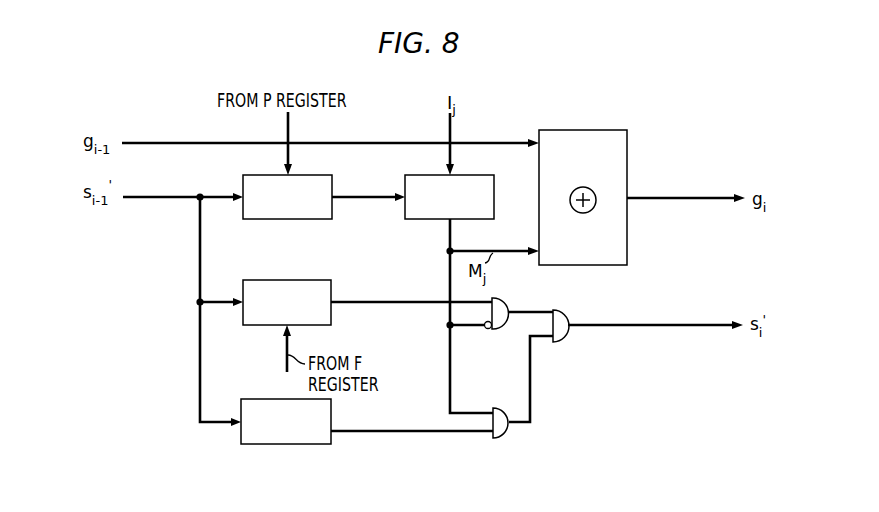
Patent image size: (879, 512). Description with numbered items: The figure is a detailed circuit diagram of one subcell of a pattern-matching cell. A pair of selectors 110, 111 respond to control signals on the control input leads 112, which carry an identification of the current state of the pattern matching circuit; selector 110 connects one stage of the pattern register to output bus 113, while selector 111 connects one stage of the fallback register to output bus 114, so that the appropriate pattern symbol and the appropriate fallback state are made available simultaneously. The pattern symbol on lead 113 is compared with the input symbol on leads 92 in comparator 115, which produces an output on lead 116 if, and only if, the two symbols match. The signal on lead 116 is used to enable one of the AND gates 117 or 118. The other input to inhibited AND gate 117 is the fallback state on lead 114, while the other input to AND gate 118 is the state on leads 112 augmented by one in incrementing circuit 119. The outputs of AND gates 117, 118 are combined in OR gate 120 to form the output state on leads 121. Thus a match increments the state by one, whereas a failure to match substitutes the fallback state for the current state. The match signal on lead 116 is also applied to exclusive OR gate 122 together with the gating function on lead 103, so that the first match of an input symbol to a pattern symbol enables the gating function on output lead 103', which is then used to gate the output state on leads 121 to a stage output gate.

The gating function lead 103 is at (330, 130).
The control input leads 112 is at (179, 200).
The selector 110 is at (299, 221).
The output bus 113 is at (367, 201).
The comparator 115 is at (428, 221).
The input symbol leads 92 is at (448, 134).
The comparator output lead 116 is at (446, 233).
The exclusive OR gate 122 is at (627, 230).
The output gating function lead 103' is at (686, 183).
The selector 111 is at (331, 285).
The output bus 114 is at (399, 304).
The inhibited AND gate 117 is at (519, 307).
The AND gate 118 is at (500, 438).
The incrementing circuit 119 is at (318, 446).
The OR gate 120 is at (548, 359).
The output state leads 121 is at (647, 323).